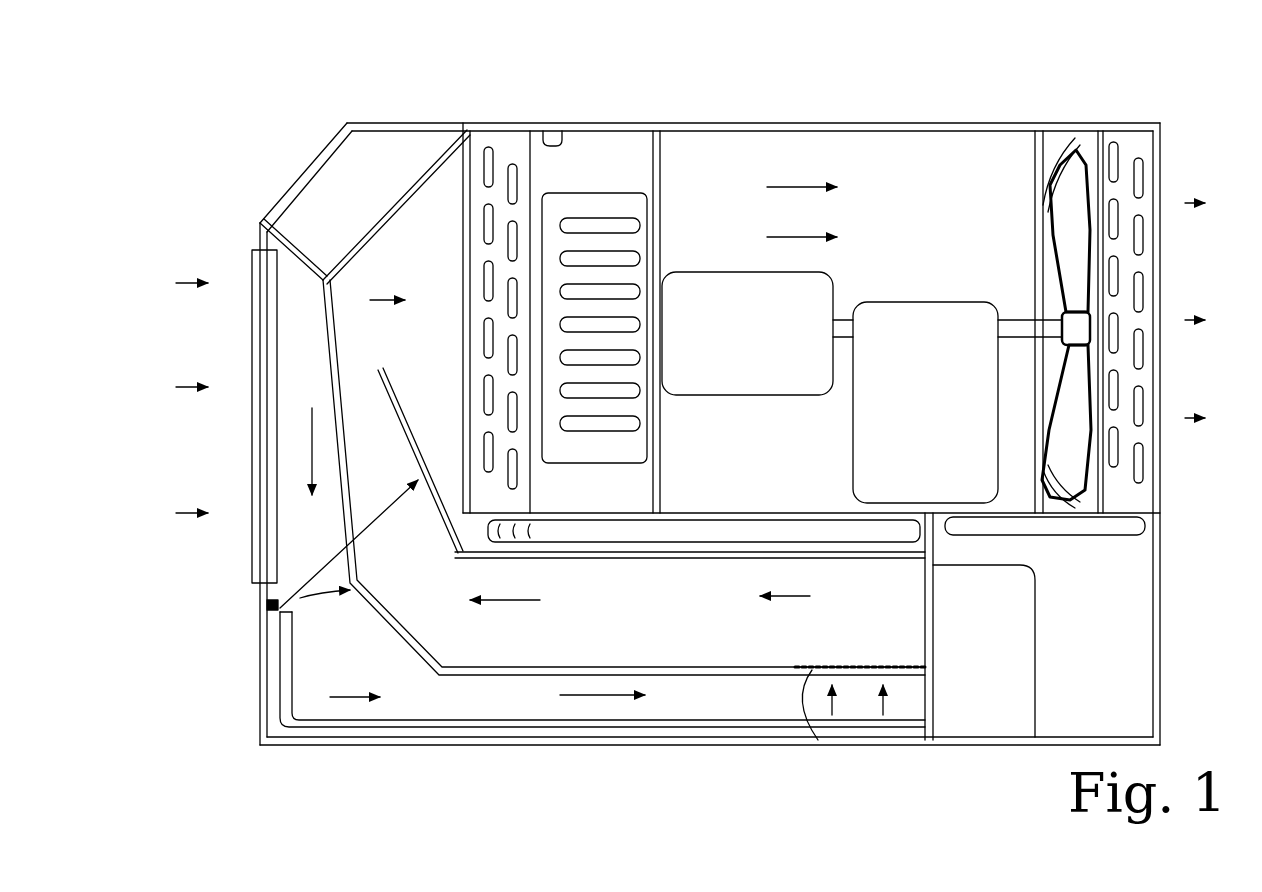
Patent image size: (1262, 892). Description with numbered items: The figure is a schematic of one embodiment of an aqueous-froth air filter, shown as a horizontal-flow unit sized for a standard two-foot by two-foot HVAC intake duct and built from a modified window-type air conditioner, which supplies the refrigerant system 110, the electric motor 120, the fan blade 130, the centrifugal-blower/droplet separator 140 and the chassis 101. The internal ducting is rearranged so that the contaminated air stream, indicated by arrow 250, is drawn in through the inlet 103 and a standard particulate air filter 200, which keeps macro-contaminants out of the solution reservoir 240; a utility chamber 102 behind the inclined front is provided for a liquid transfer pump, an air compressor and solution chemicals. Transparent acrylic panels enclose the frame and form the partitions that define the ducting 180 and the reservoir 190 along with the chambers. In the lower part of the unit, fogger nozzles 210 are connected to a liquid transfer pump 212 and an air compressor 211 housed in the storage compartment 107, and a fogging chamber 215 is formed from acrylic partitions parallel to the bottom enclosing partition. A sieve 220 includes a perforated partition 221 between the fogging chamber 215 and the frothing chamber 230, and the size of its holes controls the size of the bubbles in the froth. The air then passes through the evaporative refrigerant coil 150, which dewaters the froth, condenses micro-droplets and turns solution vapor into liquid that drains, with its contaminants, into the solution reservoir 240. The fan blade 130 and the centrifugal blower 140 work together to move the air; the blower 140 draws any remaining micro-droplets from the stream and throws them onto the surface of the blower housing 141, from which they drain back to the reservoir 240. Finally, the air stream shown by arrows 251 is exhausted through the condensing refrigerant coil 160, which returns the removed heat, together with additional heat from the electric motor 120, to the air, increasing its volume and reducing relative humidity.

The chassis 101 is at (905, 735).
The utility chamber 102 is at (377, 155).
The inlet 103 is at (250, 388).
The storage compartment 107 is at (1148, 572).
The refrigerant system 110 is at (928, 330).
The electric motor 120 is at (718, 300).
The fan blade 130 is at (1068, 190).
The centrifugal blower/droplet separator 140 is at (592, 207).
The blower housing 141 is at (541, 135).
The evaporative refrigerant coil 150 is at (508, 142).
The condensing refrigerant coil 160 is at (1135, 148).
The ducting 180 is at (345, 587).
The reservoir 190 is at (730, 700).
The particulate air filter 200 is at (275, 315).
The fogger nozzles 210 is at (293, 678).
The air compressor 211 is at (1122, 676).
The liquid transfer pump 212 is at (1010, 634).
The fogging chamber 215 is at (370, 660).
The sieve 220 is at (818, 740).
The partition 221 is at (898, 665).
The frothing chamber 230 is at (410, 344).
The solution reservoir 240 is at (610, 715).
The arrow 250 is at (310, 458).
The arrows 251 is at (797, 237).